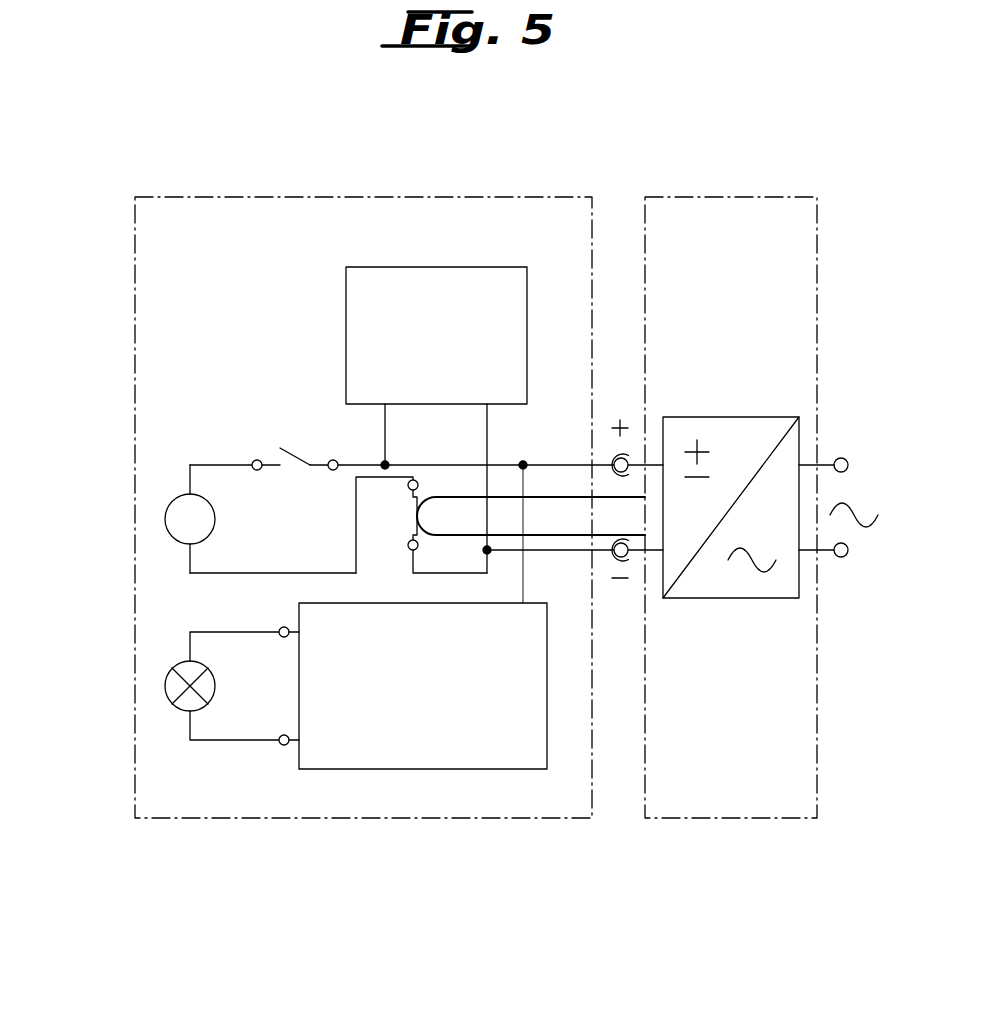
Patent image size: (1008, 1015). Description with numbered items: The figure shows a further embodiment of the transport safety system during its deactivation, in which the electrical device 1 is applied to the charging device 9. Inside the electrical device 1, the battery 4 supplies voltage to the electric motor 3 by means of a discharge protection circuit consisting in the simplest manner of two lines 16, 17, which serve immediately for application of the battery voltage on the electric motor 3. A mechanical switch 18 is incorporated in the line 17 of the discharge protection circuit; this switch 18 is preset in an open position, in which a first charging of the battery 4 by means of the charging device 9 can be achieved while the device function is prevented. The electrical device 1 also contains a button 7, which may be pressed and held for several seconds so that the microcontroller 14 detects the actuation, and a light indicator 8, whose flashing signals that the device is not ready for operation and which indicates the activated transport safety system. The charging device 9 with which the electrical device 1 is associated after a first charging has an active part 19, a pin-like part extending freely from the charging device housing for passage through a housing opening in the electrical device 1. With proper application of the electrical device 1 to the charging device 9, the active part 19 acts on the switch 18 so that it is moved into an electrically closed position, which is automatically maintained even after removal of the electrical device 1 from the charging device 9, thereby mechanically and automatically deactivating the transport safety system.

The electrical device 1 is at (355, 205).
The electric motor 3 is at (165, 519).
The battery 4 is at (467, 288).
The button 7 is at (292, 452).
The light indicator 8 is at (172, 687).
The charging device 9 is at (752, 205).
The microcontroller 14 is at (495, 745).
The line 16 is at (385, 432).
The line 17 is at (487, 428).
The switch 18 is at (415, 525).
The active part 19 is at (550, 525).